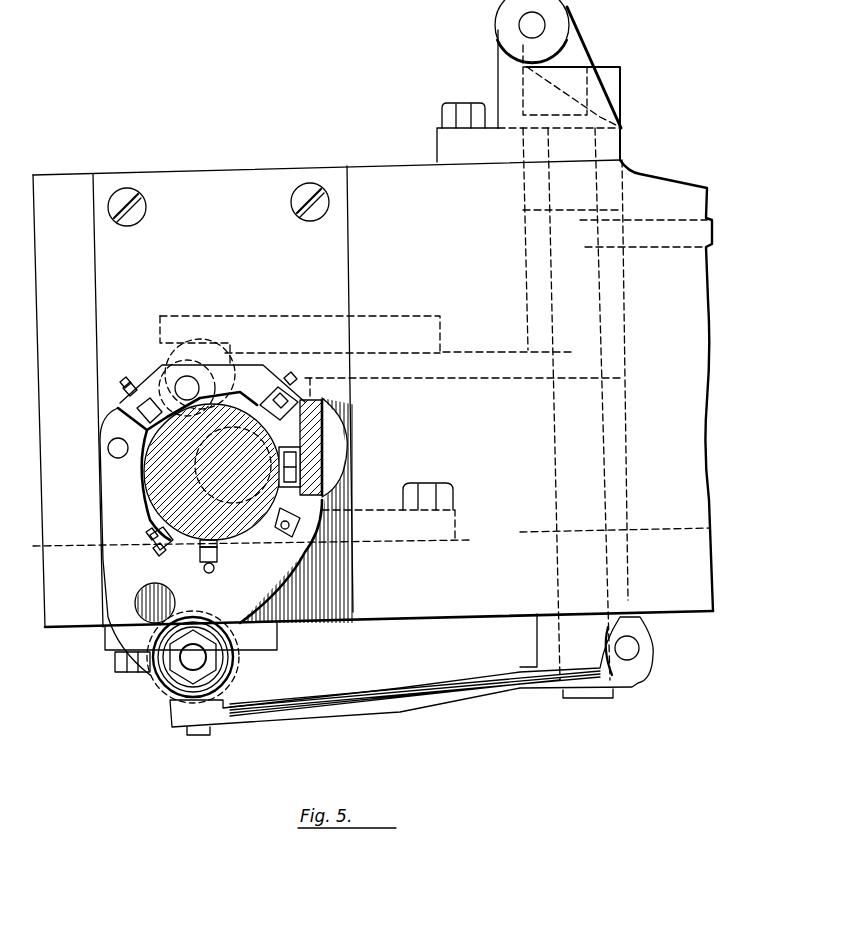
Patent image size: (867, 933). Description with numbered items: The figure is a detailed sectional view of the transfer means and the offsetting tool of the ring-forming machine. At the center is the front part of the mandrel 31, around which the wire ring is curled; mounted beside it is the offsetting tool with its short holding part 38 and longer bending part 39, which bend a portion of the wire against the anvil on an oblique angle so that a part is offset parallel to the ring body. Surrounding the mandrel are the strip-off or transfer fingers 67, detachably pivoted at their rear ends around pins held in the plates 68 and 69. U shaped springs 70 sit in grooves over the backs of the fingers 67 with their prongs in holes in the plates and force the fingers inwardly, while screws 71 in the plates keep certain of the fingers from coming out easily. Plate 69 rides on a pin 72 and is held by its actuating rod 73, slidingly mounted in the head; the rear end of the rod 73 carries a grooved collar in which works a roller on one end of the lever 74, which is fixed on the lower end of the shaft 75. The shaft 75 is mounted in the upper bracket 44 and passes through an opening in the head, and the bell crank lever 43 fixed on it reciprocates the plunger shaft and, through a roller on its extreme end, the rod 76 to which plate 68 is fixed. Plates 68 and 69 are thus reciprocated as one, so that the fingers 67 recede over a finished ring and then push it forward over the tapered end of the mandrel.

The front part of the mandrel 31 is at (213, 473).
The short holding part 38 is at (305, 455).
The longer bending part 39 is at (302, 480).
The bell crank lever 43 is at (655, 226).
The upper bracket 44 is at (498, 86).
The fingers 67 is at (135, 407).
The plate 68 is at (238, 372).
The plate 69 is at (177, 602).
The U shaped springs 70 is at (152, 537).
The screws 71 is at (128, 384).
The pin 72 is at (116, 447).
The actuating rod 73 is at (203, 660).
The lever 74 is at (333, 707).
The shaft 75 is at (598, 470).
The rod 76 is at (186, 386).